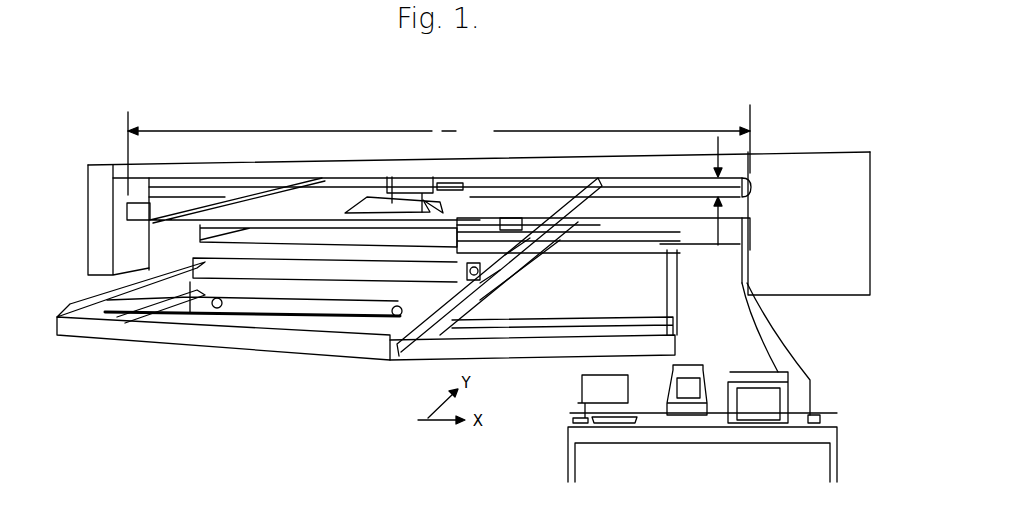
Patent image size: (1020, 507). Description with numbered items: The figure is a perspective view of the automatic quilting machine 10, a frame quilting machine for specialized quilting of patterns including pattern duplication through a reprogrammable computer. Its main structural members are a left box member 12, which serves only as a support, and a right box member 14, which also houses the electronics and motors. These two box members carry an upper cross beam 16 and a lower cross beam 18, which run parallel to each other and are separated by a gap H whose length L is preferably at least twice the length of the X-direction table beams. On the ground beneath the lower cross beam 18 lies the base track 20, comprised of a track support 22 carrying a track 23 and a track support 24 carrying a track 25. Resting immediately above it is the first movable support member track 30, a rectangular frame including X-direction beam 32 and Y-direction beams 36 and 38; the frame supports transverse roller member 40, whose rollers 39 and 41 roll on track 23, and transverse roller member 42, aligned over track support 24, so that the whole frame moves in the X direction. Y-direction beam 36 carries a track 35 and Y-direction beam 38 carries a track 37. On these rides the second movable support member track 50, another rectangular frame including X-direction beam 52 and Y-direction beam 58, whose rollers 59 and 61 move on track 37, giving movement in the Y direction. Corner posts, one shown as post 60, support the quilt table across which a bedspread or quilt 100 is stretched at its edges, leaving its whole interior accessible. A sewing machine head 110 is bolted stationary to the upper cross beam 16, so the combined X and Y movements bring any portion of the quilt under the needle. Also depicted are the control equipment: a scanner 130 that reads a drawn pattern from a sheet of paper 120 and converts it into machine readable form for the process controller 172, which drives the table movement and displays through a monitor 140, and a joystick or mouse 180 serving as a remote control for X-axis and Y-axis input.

The automatic quilting machine 10 is at (688, 146).
The left box member 12 is at (101, 170).
The right box member 14 is at (860, 215).
The upper cross beam 16 is at (638, 160).
The lower cross beam 18 is at (627, 240).
The base track 20 is at (564, 348).
The track support 22 is at (550, 345).
The track 23 is at (514, 328).
The track support 24 is at (648, 252).
The track 25 is at (664, 244).
The first movable support member track 30 is at (228, 326).
The X-direction beam 32 is at (335, 350).
The track 35 is at (150, 283).
The Y-direction beam 36 is at (118, 302).
The track 37 is at (477, 283).
The Y-direction beam 38 is at (502, 277).
The roller 39 is at (205, 306).
The transverse roller member 40 is at (272, 300).
The roller 41 is at (396, 318).
The transverse roller member 42 is at (527, 240).
The second movable support member track 50 is at (515, 220).
The X-direction beam 52 is at (457, 318).
The Y-direction beam 58 is at (523, 263).
The roller 59 is at (478, 265).
The post 60 is at (195, 233).
The roller 61 is at (548, 228).
The quilt 100 is at (365, 213).
The sewing machine head 110 is at (428, 200).
The sheet of paper 120 is at (618, 425).
The scanner 130 is at (585, 393).
The monitor 140 is at (737, 418).
The process controller 172 is at (682, 420).
The joystick or mouse 180 is at (815, 412).